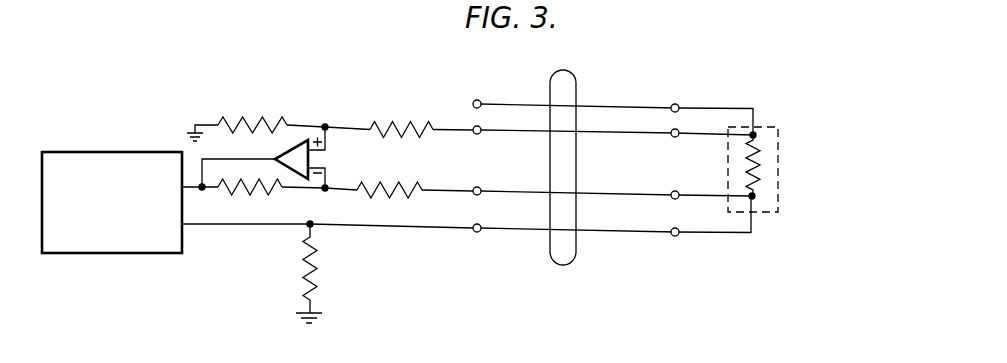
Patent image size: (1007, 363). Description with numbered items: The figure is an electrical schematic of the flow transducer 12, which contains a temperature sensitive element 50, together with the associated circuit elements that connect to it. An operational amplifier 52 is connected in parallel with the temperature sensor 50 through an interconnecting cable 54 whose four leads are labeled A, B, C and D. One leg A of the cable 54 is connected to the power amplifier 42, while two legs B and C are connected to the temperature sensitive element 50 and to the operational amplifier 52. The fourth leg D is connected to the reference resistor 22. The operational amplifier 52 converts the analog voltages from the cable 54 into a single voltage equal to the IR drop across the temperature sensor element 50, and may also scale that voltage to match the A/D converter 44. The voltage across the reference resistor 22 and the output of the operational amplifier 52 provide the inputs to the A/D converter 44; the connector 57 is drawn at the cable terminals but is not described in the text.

The flow transducer 12 is at (773, 123).
The reference resistor 22 is at (379, 273).
The power amplifier 42 is at (473, 105).
The A/D converter 44 is at (137, 253).
The temperature sensitive element 50 is at (754, 183).
The operational amplifier 52 is at (340, 163).
The interconnecting cable 54 is at (593, 93).
The connector 57 is at (516, 81).